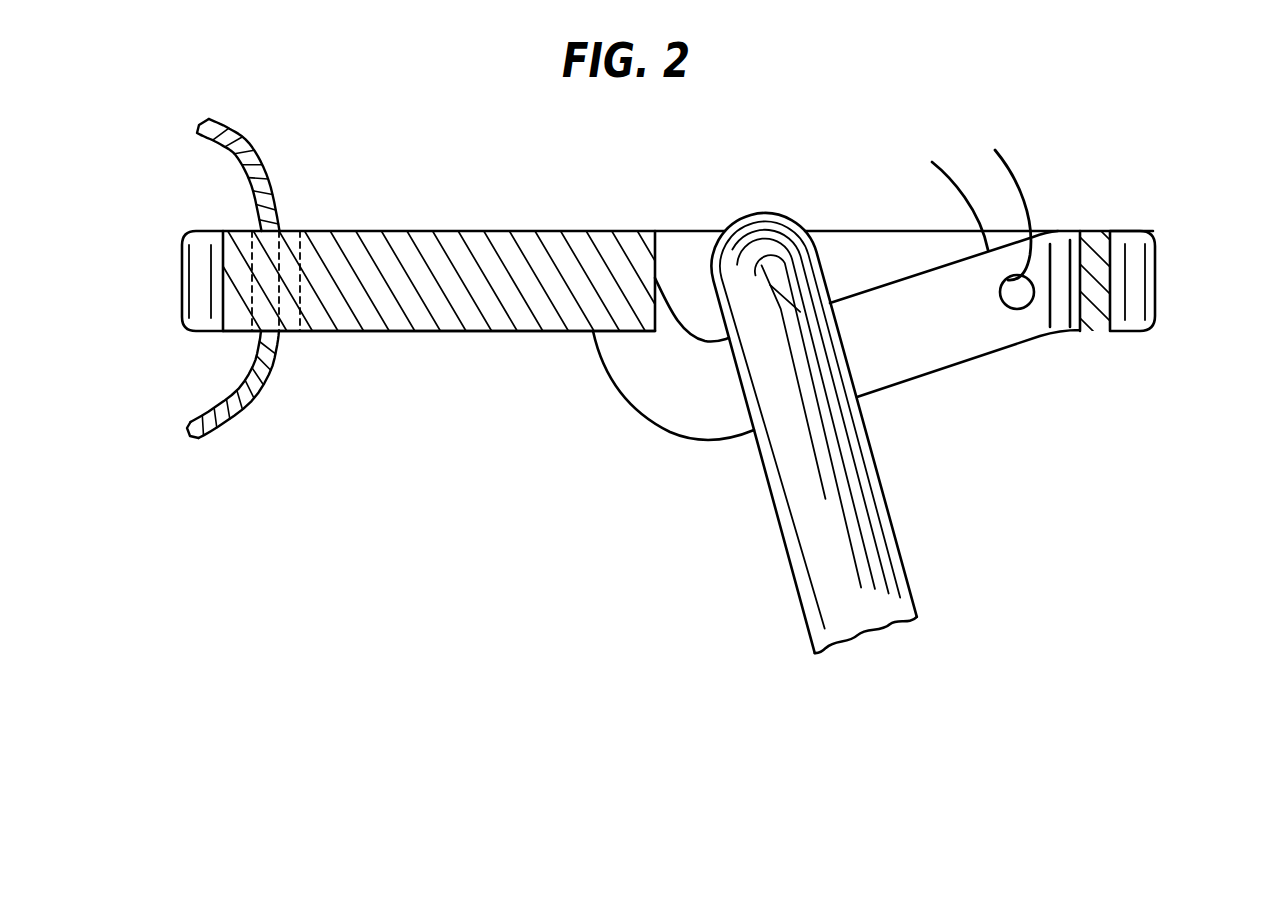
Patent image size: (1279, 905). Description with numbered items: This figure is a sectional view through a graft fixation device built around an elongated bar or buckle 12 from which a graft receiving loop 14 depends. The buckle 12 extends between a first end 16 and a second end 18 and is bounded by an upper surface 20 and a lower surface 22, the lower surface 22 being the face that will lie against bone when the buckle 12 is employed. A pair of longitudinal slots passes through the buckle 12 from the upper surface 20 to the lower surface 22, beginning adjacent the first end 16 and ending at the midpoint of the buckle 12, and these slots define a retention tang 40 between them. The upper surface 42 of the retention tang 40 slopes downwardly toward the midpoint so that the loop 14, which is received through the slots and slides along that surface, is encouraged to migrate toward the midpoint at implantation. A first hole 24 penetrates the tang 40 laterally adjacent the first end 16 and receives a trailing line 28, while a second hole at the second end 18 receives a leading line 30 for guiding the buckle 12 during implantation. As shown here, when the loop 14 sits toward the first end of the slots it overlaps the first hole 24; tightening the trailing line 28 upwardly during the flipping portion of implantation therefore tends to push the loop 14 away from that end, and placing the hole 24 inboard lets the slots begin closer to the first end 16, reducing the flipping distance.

The buckle 12 is at (428, 404).
The graft receiving loop 14 is at (885, 562).
The first end 16 is at (1156, 260).
The second end 18 is at (182, 278).
The upper surface 20 is at (378, 231).
The lower surface 22 is at (323, 331).
The first hole 24 is at (1024, 303).
The trailing line 28 is at (1022, 184).
The leading line 30 is at (250, 152).
The retention tang 40 is at (873, 350).
The upper surface of the retention tang 42 is at (898, 278).